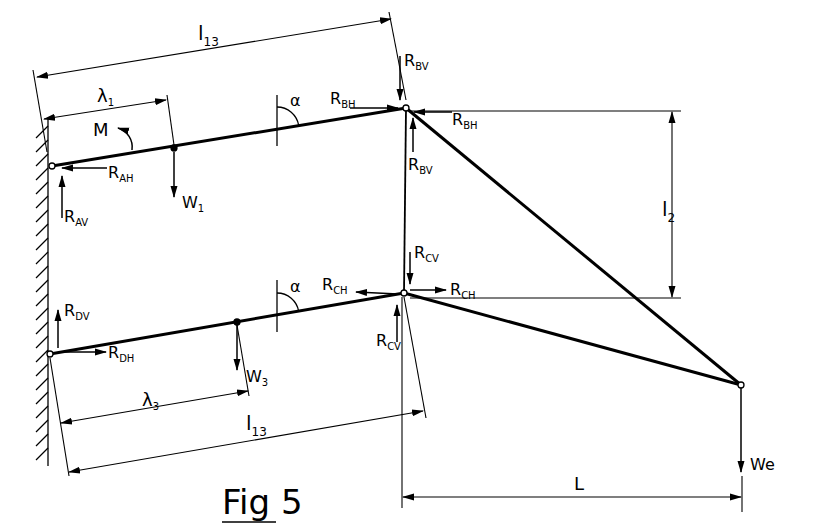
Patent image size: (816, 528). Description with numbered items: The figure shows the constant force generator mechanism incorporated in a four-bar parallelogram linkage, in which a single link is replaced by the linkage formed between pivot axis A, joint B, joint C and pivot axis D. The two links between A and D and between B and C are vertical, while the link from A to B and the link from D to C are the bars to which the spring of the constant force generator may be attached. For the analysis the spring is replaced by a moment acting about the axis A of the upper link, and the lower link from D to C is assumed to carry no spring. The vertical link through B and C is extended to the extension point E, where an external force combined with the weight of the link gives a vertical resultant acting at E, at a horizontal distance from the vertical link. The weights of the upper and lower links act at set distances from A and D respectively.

The pivot axis A is at (56, 155).
The joint B is at (413, 98).
The joint C is at (395, 284).
The pivot axis D is at (56, 366).
The extension point E is at (748, 384).